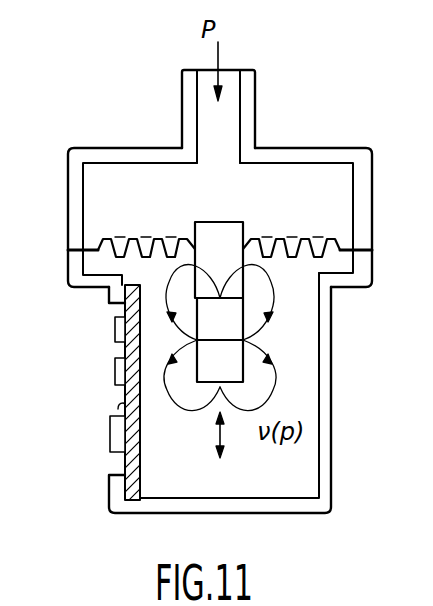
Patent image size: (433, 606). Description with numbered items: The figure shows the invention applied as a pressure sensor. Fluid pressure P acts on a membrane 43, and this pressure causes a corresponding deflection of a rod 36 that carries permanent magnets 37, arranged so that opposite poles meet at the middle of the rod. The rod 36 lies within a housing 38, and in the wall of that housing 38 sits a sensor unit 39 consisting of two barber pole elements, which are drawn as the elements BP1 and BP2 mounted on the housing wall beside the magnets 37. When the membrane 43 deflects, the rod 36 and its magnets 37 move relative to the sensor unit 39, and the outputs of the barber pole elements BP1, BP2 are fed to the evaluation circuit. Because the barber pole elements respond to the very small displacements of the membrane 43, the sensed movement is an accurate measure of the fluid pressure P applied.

The rod 36 is at (232, 236).
The permanent magnets 37 is at (237, 352).
The housing 38 is at (327, 464).
The sensor unit 39 is at (118, 421).
The membrane 43 is at (326, 238).
The magnetic field sensor BP1 is at (113, 333).
The magnetic field sensor BP2 is at (114, 371).